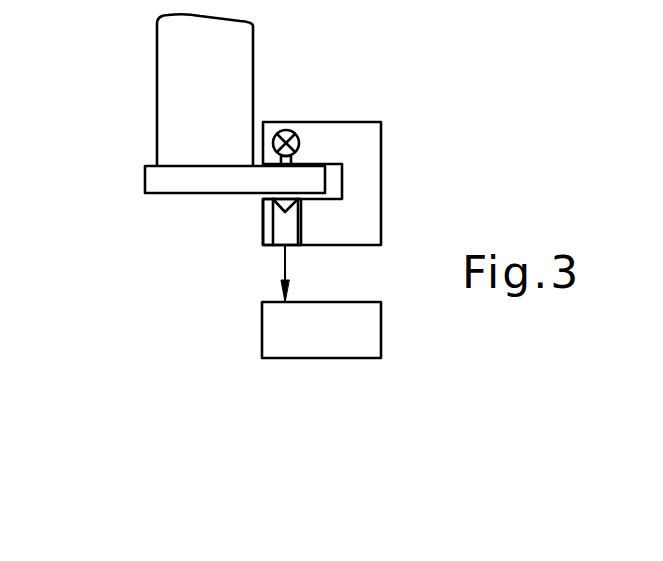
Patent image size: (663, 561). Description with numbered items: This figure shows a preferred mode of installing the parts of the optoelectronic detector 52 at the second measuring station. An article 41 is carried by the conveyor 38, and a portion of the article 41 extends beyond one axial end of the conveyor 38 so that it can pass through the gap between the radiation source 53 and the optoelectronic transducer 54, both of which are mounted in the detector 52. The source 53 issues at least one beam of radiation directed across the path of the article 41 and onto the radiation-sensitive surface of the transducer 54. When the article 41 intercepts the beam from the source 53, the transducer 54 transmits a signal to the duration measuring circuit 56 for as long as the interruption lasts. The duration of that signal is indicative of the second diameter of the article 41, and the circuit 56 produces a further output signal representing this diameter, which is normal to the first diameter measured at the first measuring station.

The conveyor 38 is at (173, 69).
The article 41 is at (158, 182).
The optoelectronic detector 52 is at (368, 183).
The radiation source 53 is at (287, 131).
The optoelectronic transducer 54 is at (288, 223).
The duration measuring circuit 56 is at (283, 334).